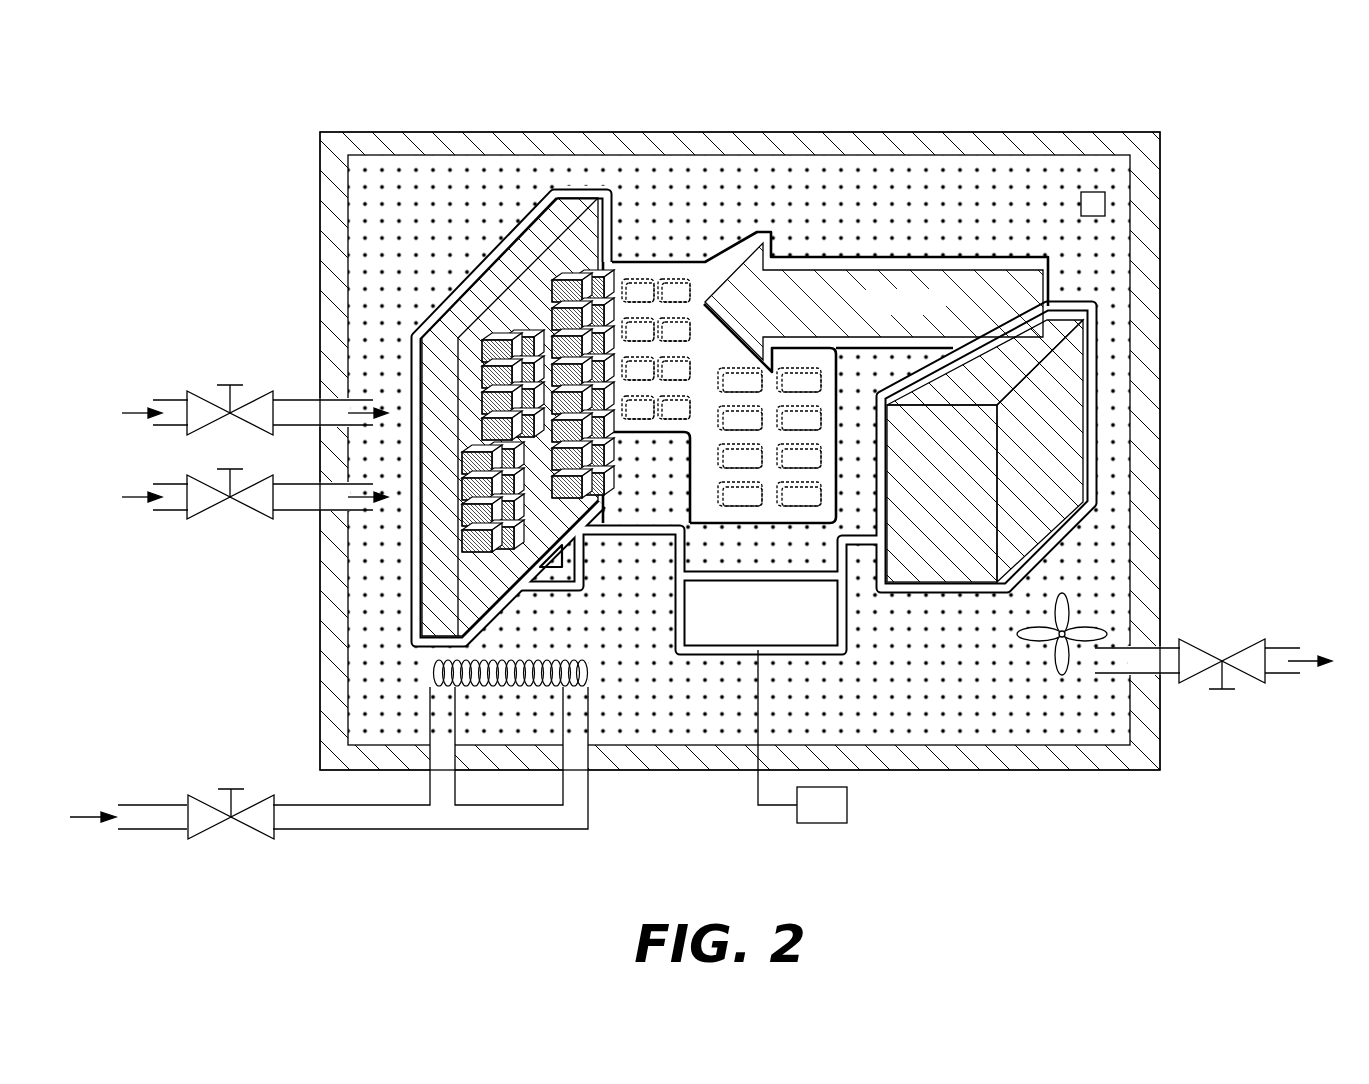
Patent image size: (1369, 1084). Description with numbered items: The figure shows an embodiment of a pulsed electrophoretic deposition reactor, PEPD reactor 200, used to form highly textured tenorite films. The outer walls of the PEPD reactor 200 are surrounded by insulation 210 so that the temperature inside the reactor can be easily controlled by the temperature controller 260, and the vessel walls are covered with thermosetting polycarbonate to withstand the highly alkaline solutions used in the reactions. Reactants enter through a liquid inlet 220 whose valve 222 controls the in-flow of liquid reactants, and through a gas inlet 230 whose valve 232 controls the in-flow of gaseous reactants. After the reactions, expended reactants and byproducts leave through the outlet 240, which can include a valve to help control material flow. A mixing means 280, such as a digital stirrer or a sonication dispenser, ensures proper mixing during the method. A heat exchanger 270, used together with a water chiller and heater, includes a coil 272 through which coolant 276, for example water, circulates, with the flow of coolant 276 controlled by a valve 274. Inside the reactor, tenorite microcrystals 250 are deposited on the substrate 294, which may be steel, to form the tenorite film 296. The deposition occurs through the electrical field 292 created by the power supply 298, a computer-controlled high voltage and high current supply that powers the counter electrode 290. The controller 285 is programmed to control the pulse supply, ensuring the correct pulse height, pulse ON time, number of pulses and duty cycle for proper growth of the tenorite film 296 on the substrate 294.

The PEPD reactor 200 is at (845, 100).
The insulation 210 is at (752, 132).
The liquid inlet 220 is at (133, 410).
The valve 222 is at (230, 385).
The gas inlet 230 is at (133, 500).
The valve 232 is at (230, 500).
The outlet 240 is at (1303, 664).
The tenorite microcrystals 250 is at (802, 505).
The temperature controller 260 is at (1090, 192).
The heat exchanger 270 is at (505, 830).
The coil 272 is at (587, 665).
The valve 274 is at (232, 820).
The coolant 276 is at (85, 820).
The mixing means 280 is at (1068, 634).
The controller 285 is at (802, 736).
The counter electrode 290 is at (1083, 410).
The electrical field 292 is at (930, 270).
The substrate 294 is at (577, 197).
The tenorite film 296 is at (558, 302).
The power supply 298 is at (843, 618).